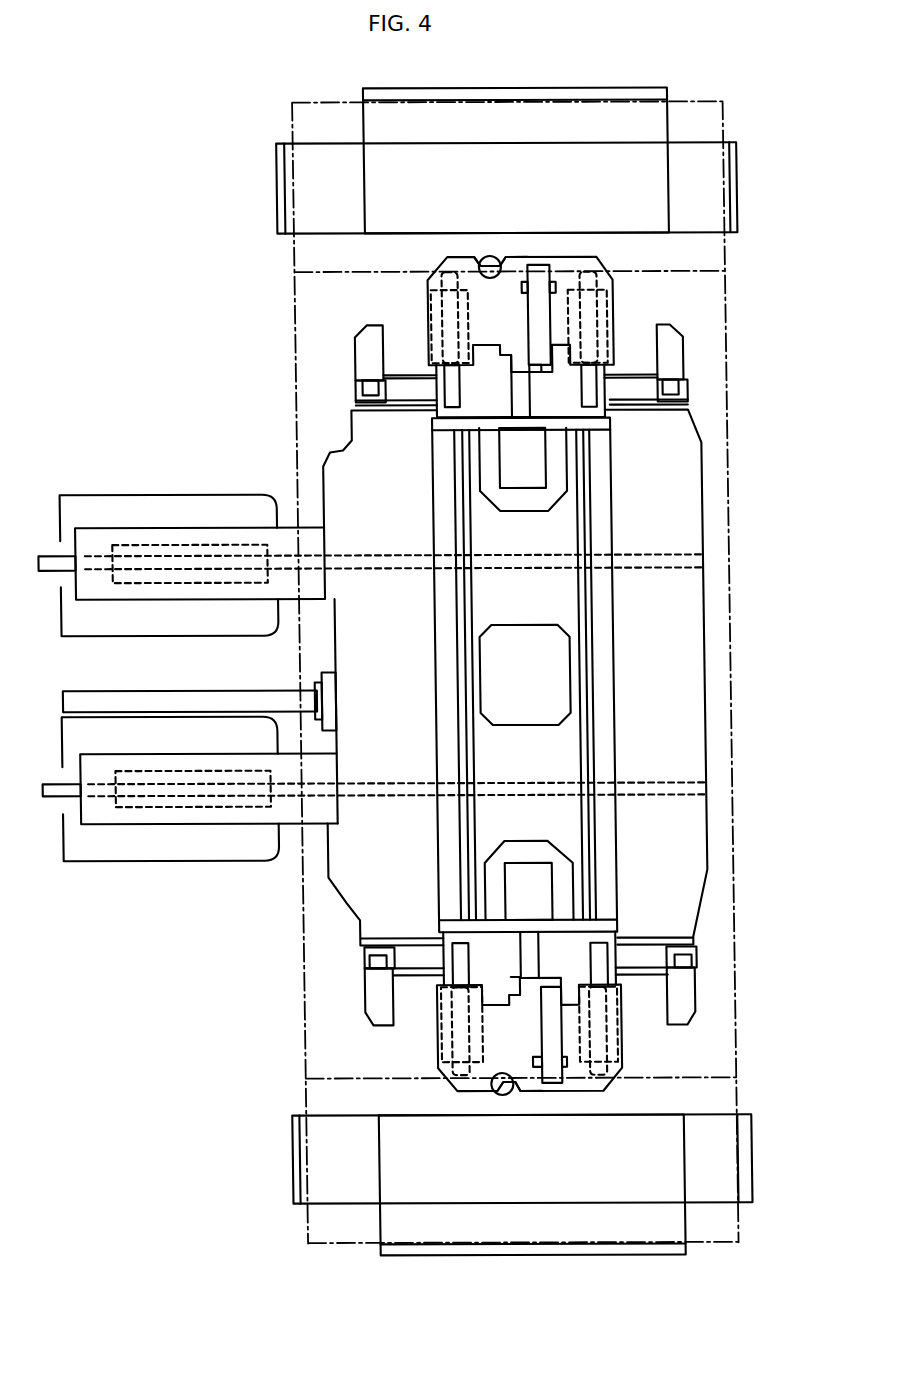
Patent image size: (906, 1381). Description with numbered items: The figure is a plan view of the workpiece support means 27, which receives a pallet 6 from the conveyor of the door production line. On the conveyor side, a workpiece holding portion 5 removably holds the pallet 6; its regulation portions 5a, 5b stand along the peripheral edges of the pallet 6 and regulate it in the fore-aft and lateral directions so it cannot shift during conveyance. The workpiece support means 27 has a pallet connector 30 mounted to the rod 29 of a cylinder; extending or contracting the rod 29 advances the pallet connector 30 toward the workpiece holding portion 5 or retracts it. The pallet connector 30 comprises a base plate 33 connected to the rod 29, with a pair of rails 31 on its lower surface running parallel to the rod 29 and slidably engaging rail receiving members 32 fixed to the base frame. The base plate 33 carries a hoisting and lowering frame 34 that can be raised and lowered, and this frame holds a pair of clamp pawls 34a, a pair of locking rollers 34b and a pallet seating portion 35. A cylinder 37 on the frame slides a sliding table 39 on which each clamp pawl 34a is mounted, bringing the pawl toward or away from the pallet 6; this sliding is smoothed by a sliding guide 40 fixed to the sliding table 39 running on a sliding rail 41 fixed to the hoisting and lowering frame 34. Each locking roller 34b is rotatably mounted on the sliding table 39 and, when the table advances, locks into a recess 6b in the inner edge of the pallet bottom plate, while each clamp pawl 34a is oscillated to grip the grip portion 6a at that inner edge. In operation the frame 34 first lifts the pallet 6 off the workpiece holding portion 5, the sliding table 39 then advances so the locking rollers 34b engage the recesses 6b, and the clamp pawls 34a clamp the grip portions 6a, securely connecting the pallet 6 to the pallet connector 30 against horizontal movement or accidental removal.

The workpiece holding portion 5 is at (648, 140).
The regulation portion 5a is at (282, 192).
The regulation portion 5b is at (540, 85).
The pallet 6 is at (644, 100).
The grip portion 6a is at (527, 257).
The recess 6b is at (501, 260).
The workpiece support means 27 is at (754, 331).
The rod 29 is at (136, 688).
The pallet connector 30 is at (560, 674).
The rail 31 is at (281, 556).
The rail receiving member 32 is at (156, 540).
The base plate 33 is at (704, 606).
The hoisting and lowering frame 34 is at (584, 744).
The clamp pawl 34a is at (544, 270).
The locking roller 34b is at (491, 250).
The pallet seating portion 35 is at (372, 329).
The cylinder 37 is at (548, 472).
The sliding table 39 is at (581, 260).
The sliding guide 40 is at (436, 307).
The sliding rail 41 is at (450, 390).